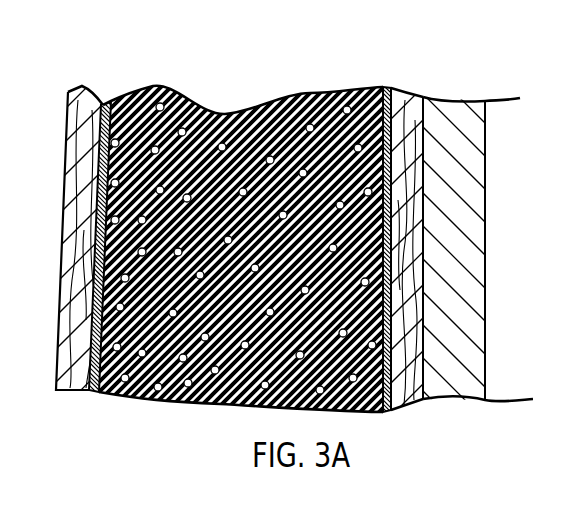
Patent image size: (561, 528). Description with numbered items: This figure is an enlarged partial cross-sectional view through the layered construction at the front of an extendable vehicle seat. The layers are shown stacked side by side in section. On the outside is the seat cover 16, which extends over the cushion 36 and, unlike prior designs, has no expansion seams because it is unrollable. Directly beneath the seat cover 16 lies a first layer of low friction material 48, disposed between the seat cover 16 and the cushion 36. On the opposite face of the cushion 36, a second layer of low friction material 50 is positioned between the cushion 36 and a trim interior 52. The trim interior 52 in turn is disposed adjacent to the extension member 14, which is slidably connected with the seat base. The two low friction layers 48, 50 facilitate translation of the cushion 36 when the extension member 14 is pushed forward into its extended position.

The extension member 14 is at (455, 100).
The seat cover 16 is at (85, 97).
The cushion 36 is at (227, 116).
The first layer of low friction material 48 is at (107, 103).
The second layer of low friction material 50 is at (388, 86).
The trim interior 52 is at (420, 97).